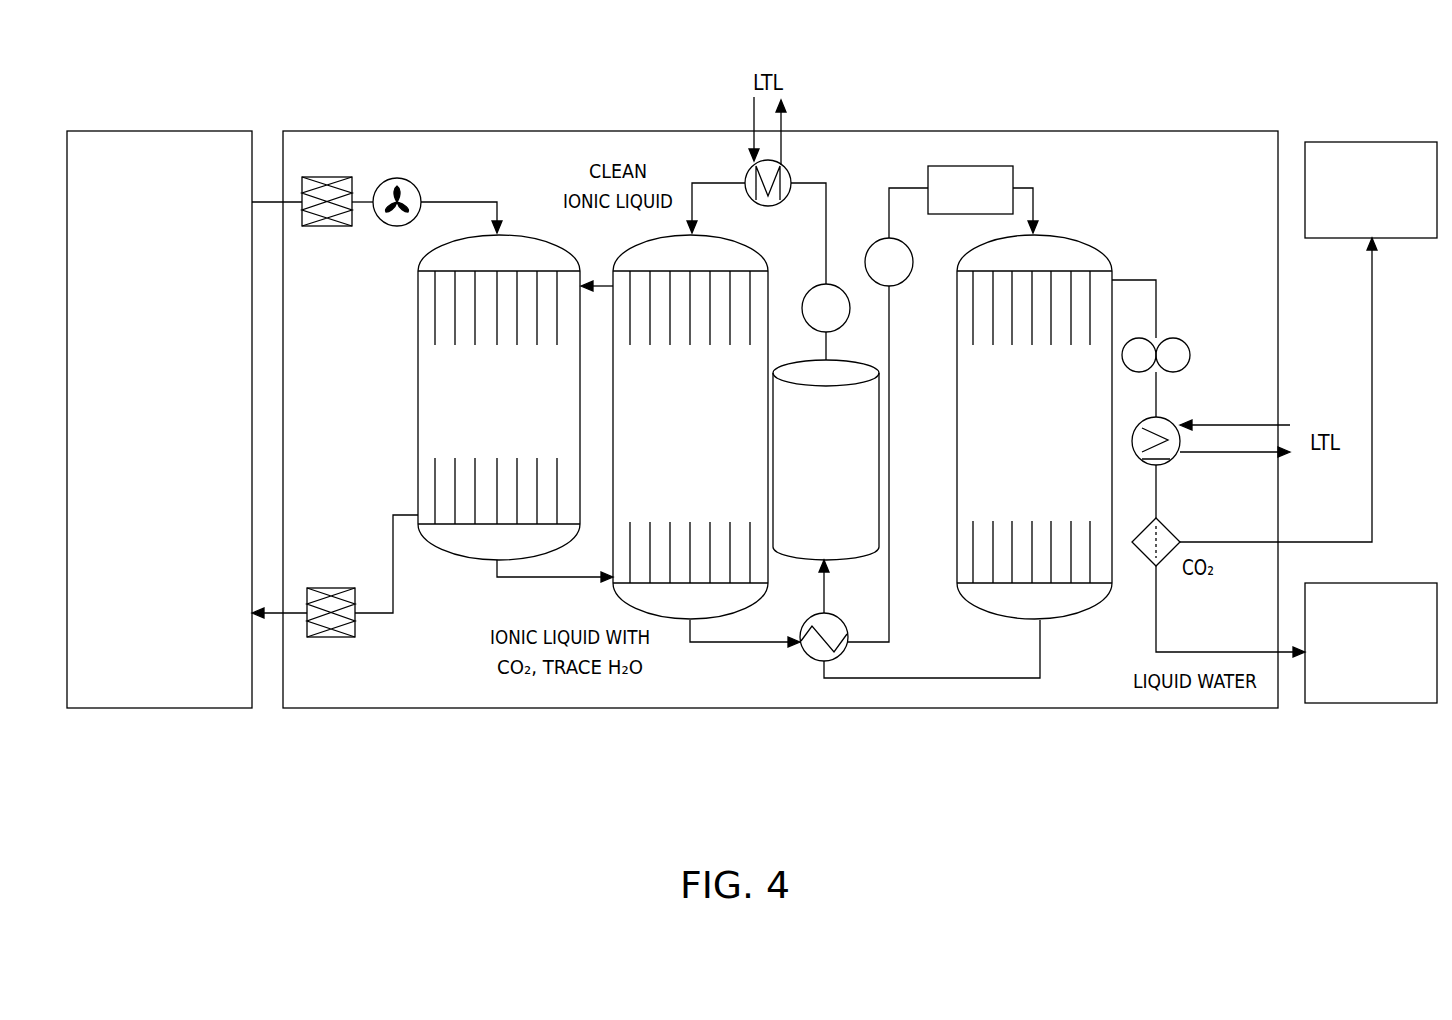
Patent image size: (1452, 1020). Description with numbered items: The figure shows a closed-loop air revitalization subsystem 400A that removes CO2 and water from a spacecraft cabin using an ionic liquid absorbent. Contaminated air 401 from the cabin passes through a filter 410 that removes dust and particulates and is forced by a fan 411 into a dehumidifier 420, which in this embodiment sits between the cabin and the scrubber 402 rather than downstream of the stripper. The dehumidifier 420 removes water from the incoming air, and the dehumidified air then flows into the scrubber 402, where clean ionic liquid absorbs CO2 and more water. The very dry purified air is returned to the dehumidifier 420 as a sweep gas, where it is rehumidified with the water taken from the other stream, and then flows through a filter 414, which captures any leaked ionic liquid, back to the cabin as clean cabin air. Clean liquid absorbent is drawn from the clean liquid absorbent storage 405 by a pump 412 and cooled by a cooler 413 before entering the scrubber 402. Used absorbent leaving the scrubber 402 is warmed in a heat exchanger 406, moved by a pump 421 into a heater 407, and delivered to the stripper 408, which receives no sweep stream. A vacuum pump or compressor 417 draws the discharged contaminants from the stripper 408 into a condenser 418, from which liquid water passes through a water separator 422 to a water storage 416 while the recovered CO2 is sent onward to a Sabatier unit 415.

The contaminant removal subsystem 400A is at (168, 98).
The contaminated air 401 is at (133, 670).
The scrubber 402 is at (685, 622).
The clean liquid absorbent storage 405 is at (884, 490).
The heat exchanger 406 is at (816, 660).
The heater 407 is at (1006, 165).
The stripper 408 is at (1046, 236).
The filter 410 is at (306, 176).
The fan 411 is at (384, 182).
The pump 412 is at (834, 284).
The cooler 413 is at (783, 162).
The filter 414 is at (343, 638).
The Sabatier reactor 415 is at (1390, 140).
The water storage 416 is at (1340, 705).
The vacuum pump and/or compressor 417 is at (1178, 338).
The condenser 418 is at (1168, 420).
The dehumidifier 420 is at (418, 382).
The pump 421 is at (900, 285).
The water separator 422 is at (1148, 556).